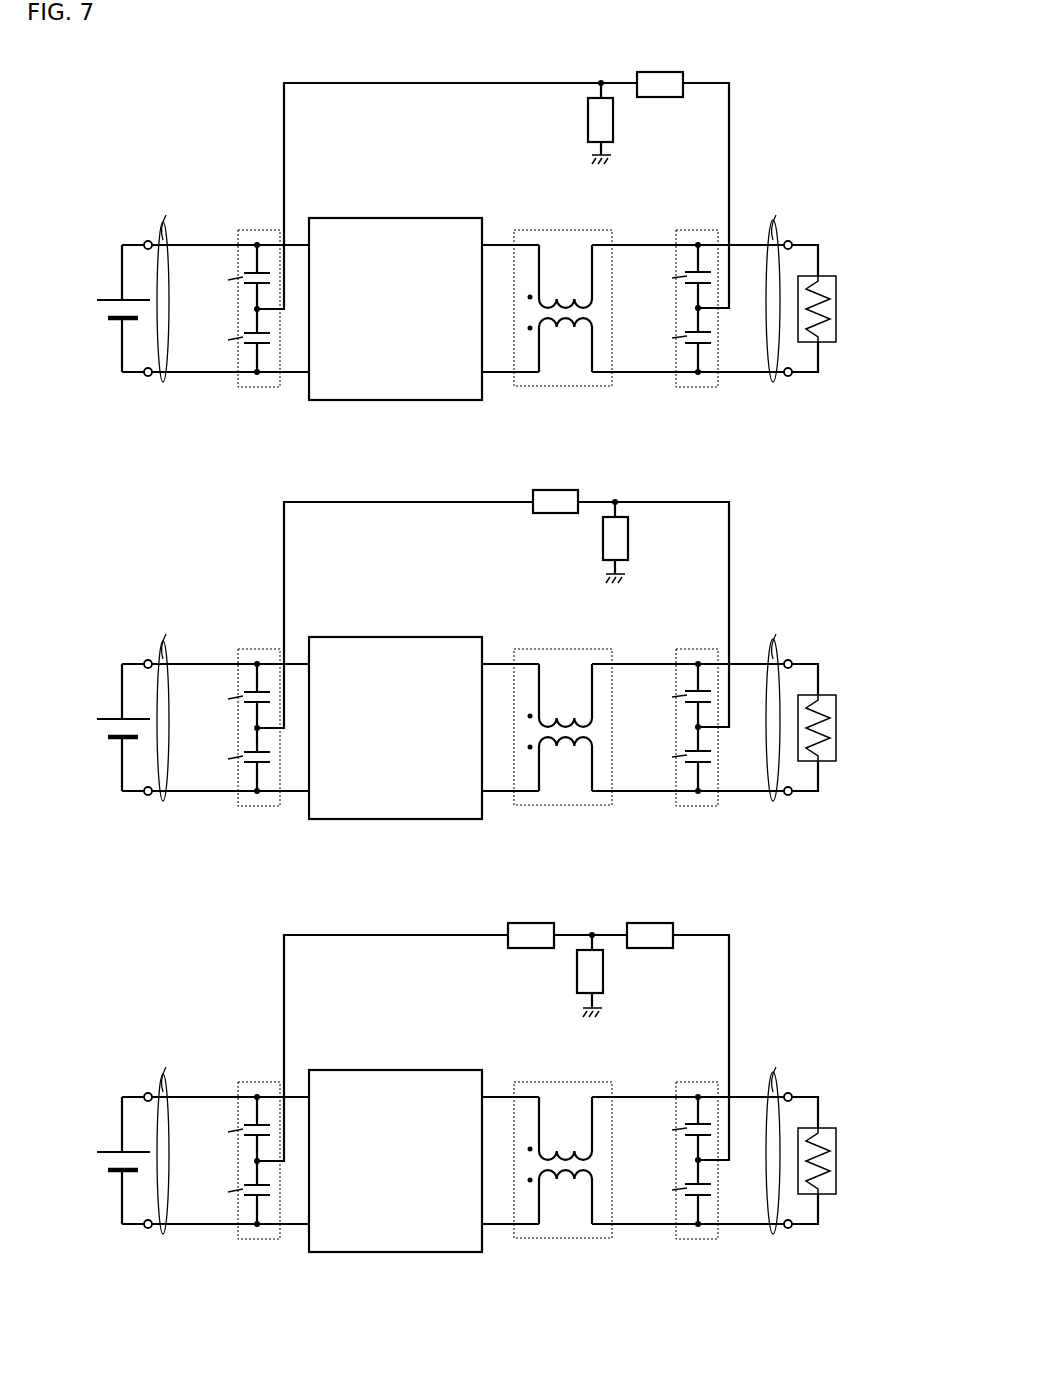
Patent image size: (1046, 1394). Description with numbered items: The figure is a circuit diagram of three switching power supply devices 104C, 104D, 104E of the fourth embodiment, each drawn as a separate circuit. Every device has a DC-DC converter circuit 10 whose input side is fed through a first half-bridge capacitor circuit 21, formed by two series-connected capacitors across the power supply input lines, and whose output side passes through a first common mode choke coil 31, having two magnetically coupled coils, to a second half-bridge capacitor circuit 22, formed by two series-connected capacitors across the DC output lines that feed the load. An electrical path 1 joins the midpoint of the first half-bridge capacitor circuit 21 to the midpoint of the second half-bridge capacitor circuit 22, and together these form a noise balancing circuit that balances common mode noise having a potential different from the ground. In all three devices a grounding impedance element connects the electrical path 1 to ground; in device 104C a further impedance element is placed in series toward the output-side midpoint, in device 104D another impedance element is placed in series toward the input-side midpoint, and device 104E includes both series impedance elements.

The electrical path 1 is at (413, 83).
The DC-DC converter circuit 10 is at (397, 218).
The first half-bridge capacitor circuit 21 is at (256, 230).
The second half-bridge capacitor circuit 22 is at (694, 230).
The first common mode choke coil 31 is at (561, 230).
The switching power supply device 104C is at (205, 66).
The switching power supply device 104D is at (463, 637).
The switching power supply device 104E is at (463, 1069).